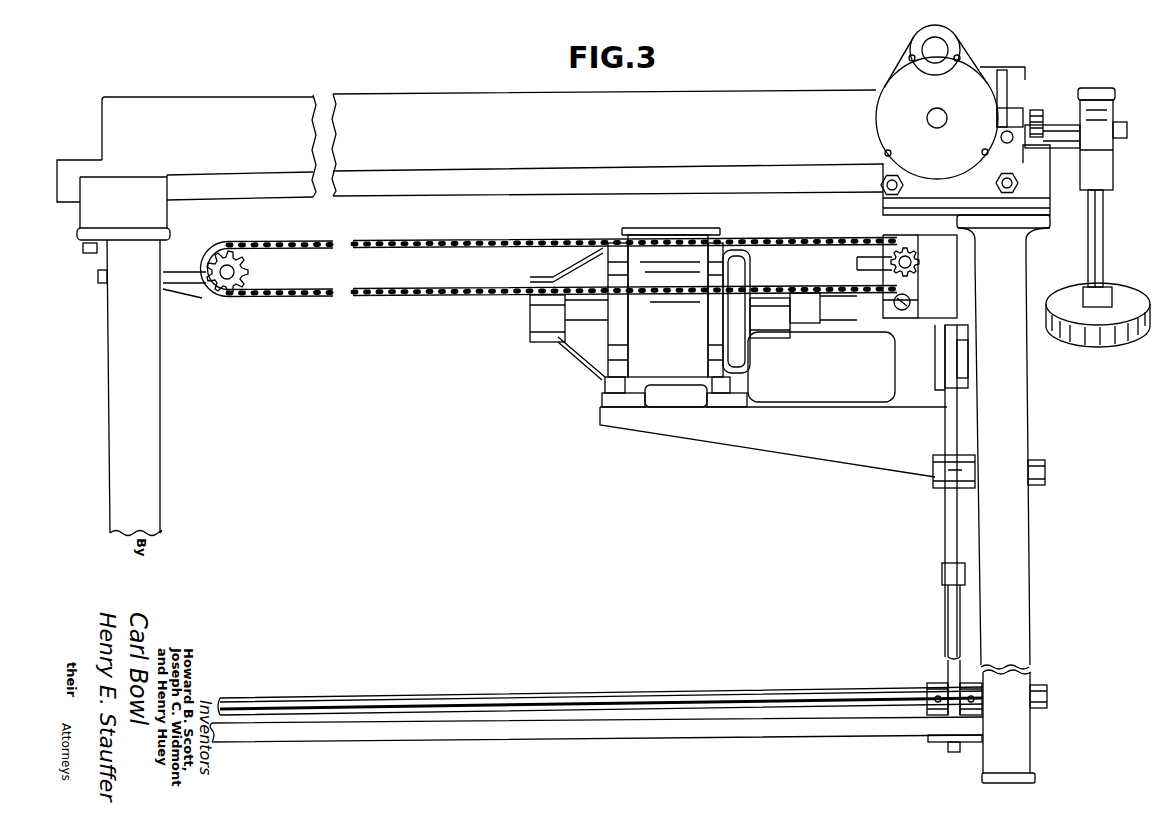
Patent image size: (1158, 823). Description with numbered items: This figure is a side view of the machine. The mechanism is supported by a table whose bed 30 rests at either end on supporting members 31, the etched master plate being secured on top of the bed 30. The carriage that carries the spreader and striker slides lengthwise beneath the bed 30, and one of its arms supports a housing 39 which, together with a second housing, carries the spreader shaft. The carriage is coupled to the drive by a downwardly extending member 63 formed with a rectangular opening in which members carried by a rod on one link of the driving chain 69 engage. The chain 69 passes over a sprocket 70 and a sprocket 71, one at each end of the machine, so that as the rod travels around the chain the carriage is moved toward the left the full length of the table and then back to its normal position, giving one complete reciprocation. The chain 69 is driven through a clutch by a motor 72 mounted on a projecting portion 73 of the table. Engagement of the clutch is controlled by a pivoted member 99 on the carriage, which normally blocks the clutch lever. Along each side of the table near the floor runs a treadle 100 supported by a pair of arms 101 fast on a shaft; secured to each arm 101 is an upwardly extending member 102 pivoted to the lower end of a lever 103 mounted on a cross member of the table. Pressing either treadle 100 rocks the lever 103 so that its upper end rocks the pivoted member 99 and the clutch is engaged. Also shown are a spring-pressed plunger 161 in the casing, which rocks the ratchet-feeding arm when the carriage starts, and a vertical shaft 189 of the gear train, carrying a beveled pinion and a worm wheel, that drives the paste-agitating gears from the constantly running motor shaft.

The bed 30 is at (473, 187).
The supporting members 31 is at (152, 370).
The housing 39 is at (950, 40).
The downwardly extending member 63 is at (947, 282).
The driving chain 69 is at (395, 292).
The sprocket 70 is at (912, 258).
The sprocket 71 is at (243, 272).
The motor 72 is at (578, 352).
The projecting portion 73 is at (740, 437).
The pivoted member 99 is at (963, 352).
The treadle 100 is at (633, 728).
The arms 101 is at (953, 700).
The upwardly extending member 102 is at (950, 603).
The lever 103 is at (948, 418).
The spring-pressed plunger 161 is at (1030, 98).
The shaft 189 is at (1095, 242).